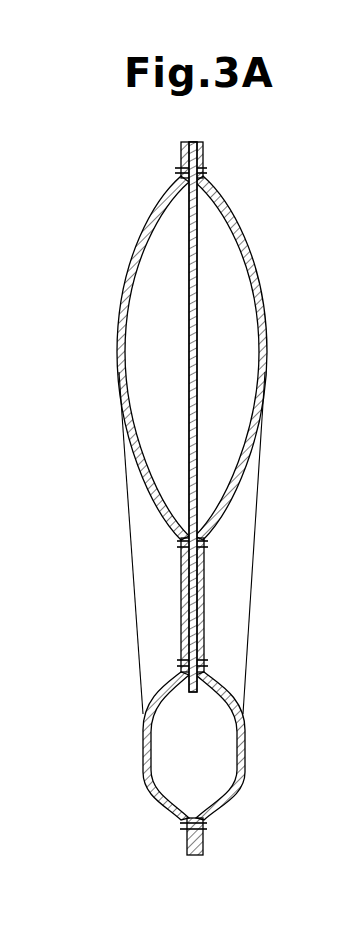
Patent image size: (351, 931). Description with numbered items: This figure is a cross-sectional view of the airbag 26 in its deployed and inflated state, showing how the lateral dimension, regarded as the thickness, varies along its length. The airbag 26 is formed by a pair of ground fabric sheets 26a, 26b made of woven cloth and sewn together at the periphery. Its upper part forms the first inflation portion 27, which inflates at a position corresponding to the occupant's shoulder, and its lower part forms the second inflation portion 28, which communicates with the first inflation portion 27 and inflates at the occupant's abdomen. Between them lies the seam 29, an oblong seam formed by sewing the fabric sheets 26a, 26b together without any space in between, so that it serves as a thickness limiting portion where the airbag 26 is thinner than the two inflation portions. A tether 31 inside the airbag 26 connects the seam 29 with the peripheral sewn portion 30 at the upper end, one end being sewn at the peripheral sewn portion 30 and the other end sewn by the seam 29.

The airbag 26 is at (122, 459).
The ground fabric sheet 26a is at (244, 232).
The ground fabric sheet 26b is at (127, 260).
The first inflation portion 27 is at (188, 358).
The second inflation portion 28 is at (246, 742).
The seam 29 is at (210, 548).
The peripheral sewn portion 30 is at (205, 167).
The tether 31 is at (198, 398).